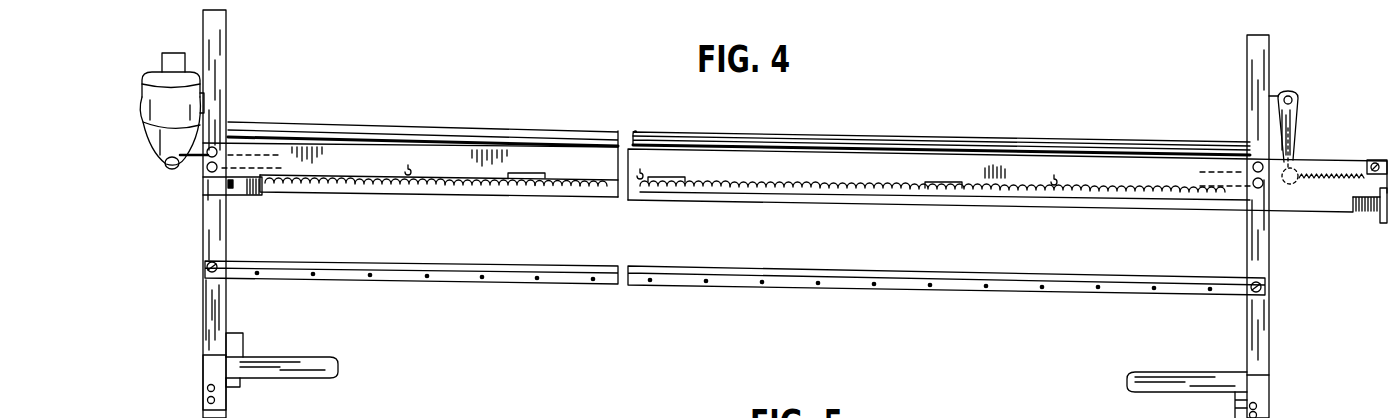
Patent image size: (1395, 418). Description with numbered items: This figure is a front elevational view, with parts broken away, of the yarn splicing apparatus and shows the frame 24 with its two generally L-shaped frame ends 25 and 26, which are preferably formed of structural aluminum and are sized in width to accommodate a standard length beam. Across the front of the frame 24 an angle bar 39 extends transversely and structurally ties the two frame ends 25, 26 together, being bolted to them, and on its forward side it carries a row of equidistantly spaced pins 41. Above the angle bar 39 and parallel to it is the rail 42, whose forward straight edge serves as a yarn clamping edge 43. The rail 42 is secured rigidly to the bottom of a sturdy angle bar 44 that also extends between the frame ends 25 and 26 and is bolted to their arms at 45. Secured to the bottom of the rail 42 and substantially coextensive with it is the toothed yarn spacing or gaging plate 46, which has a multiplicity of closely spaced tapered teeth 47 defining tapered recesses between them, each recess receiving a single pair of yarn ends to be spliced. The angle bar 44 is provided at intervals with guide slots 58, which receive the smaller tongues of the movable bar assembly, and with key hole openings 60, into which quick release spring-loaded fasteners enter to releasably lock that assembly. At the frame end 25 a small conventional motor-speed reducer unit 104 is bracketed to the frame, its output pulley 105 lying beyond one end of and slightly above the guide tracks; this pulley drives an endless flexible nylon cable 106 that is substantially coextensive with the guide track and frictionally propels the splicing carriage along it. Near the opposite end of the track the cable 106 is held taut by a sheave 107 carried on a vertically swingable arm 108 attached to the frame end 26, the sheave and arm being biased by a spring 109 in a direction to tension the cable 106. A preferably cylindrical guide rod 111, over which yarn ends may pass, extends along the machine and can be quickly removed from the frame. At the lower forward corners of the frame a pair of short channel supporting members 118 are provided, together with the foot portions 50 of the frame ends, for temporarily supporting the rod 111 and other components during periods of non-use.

The frame 24 is at (202, 303).
The frame end 25 is at (229, 55).
The frame end 26 is at (1270, 338).
The angle bar 39 is at (565, 284).
The pins 41 is at (482, 278).
The rail 42 is at (250, 187).
The yarn clamping edge 43 is at (253, 174).
The angle bar 44 is at (1158, 151).
The bolts 45 is at (207, 171).
The yarn spacing or gaging plate 46 is at (593, 198).
The tapered teeth 47 is at (865, 186).
The foot block 50 is at (206, 372).
The guide slots 58 is at (528, 173).
The key hole openings 60 is at (408, 167).
The motor-speed reducer unit 104 is at (156, 100).
The output pulley 105 is at (168, 166).
The endless flexible nylon cable 106 is at (236, 154).
The sheave 107 is at (1296, 170).
The vertically swingable arm 108 is at (1290, 126).
The spring 109 is at (1335, 196).
The guide rod 111 is at (893, 141).
The channel supporting members 118 is at (300, 371).